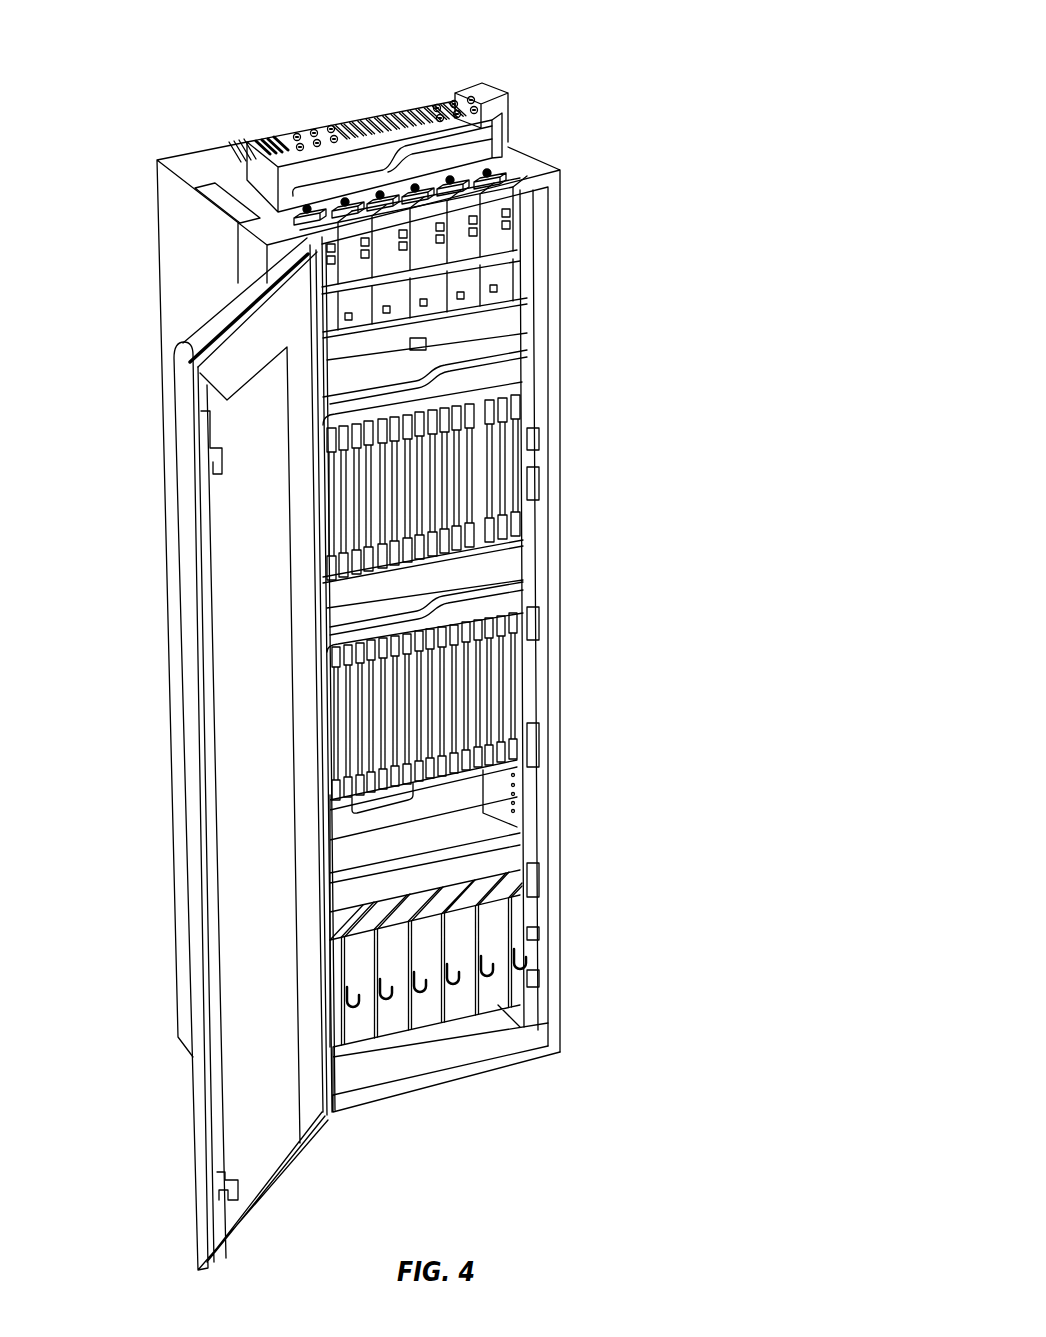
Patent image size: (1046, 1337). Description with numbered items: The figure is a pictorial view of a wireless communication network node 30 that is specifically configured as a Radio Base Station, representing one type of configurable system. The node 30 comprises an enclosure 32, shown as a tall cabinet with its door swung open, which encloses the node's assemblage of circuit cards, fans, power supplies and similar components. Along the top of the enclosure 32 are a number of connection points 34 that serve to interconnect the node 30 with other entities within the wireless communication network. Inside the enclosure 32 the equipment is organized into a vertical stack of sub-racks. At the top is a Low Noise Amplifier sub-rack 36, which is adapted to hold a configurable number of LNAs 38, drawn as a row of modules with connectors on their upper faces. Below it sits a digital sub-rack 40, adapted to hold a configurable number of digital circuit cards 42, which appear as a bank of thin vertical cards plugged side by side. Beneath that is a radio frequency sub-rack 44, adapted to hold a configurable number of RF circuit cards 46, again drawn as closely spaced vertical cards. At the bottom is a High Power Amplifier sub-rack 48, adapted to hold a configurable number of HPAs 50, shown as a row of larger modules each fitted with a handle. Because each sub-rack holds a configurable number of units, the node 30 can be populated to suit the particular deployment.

The wireless communication network node 30 is at (176, 97).
The enclosure 32 is at (556, 1044).
The connection points 34 is at (383, 113).
The Low Noise Amplifier (LNA) sub-rack 36 is at (536, 121).
The LNAs 38 is at (453, 243).
The digital sub-rack 40 is at (463, 353).
The digital circuit cards 42 is at (460, 490).
The radio frequency (RF) sub-rack 44 is at (468, 565).
The RF circuit cards 46 is at (457, 693).
The High Power Amplifier (HPA) sub-rack 48 is at (455, 882).
The HPAs 50 is at (498, 945).